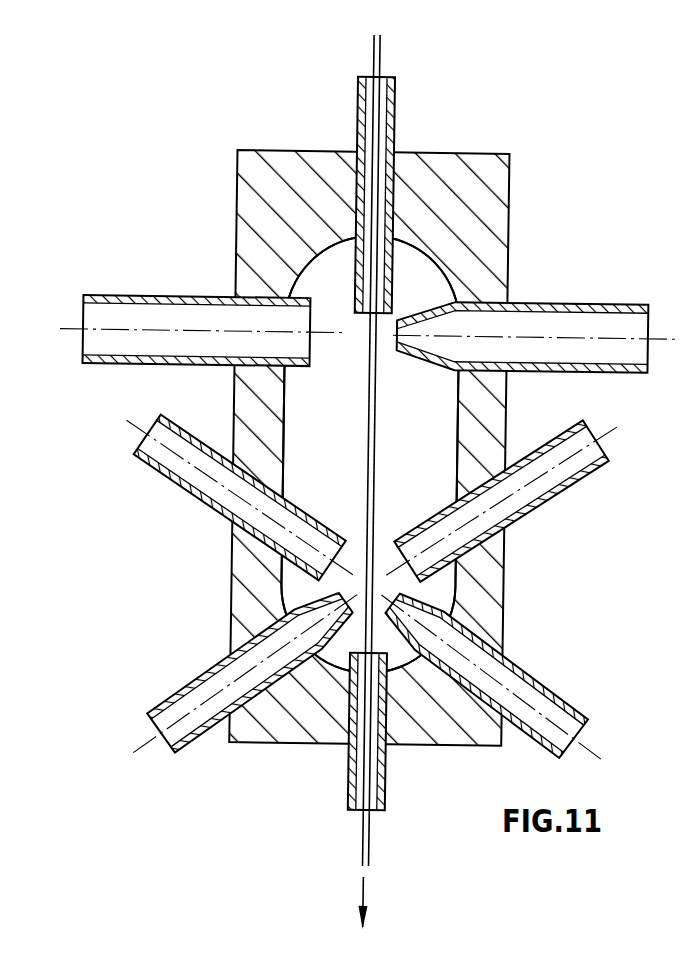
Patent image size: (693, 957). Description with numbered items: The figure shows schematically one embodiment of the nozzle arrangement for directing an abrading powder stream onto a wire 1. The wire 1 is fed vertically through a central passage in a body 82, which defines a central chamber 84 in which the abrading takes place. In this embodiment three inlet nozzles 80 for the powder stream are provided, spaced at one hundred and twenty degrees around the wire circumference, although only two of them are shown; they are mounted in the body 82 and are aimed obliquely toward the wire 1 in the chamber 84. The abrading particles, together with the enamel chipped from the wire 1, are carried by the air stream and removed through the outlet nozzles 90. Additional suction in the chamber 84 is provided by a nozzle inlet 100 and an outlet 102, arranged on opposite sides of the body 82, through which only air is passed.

The wire 1 is at (377, 63).
The body 82 is at (484, 233).
The central chamber 84 is at (424, 448).
The nozzle inlet 100 is at (603, 302).
The outlet 102 is at (147, 303).
The outlet nozzle 90 is at (175, 493).
The inlet nozzle 80 is at (193, 747).